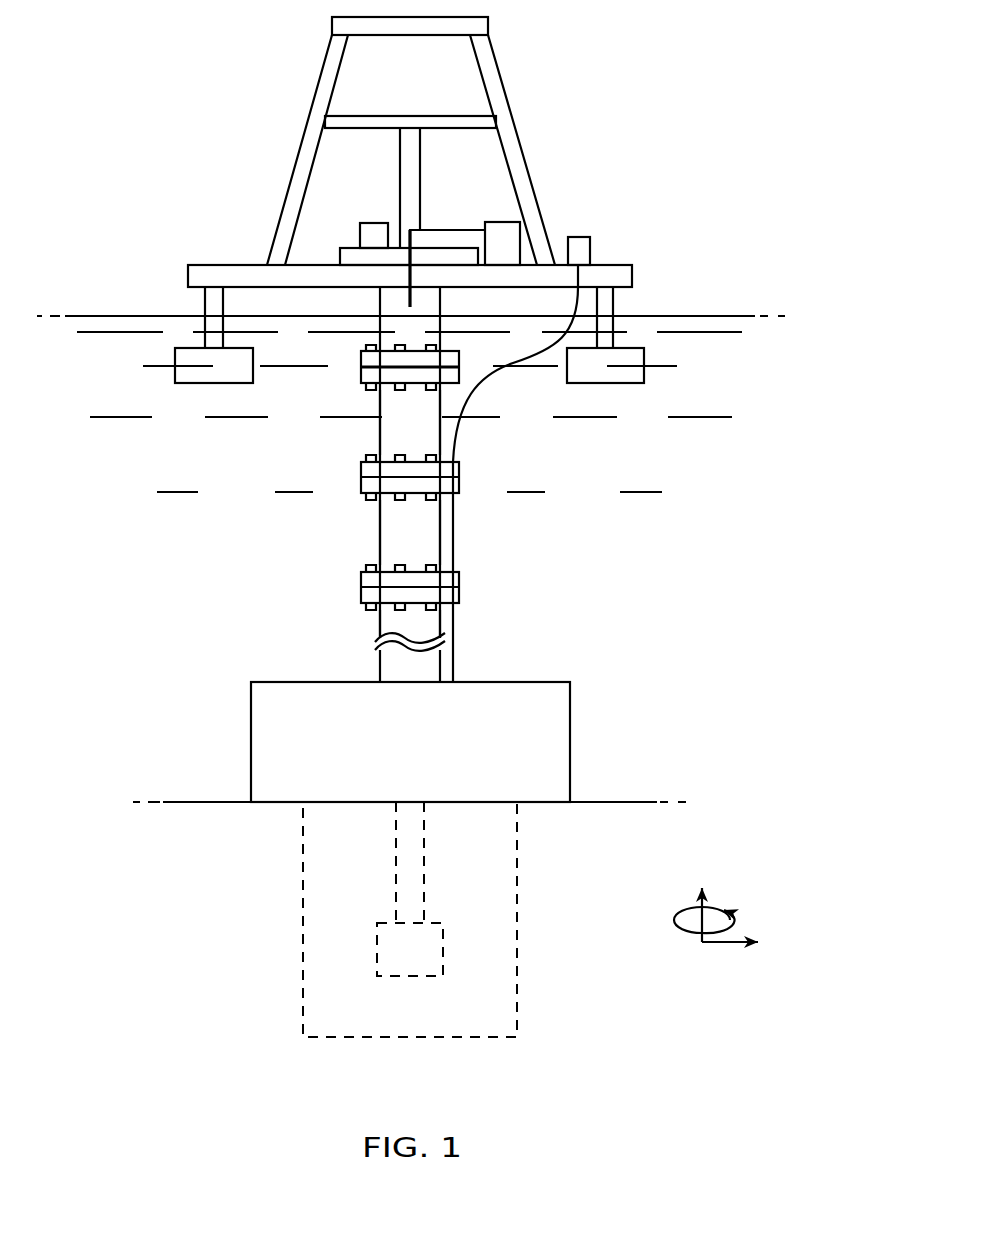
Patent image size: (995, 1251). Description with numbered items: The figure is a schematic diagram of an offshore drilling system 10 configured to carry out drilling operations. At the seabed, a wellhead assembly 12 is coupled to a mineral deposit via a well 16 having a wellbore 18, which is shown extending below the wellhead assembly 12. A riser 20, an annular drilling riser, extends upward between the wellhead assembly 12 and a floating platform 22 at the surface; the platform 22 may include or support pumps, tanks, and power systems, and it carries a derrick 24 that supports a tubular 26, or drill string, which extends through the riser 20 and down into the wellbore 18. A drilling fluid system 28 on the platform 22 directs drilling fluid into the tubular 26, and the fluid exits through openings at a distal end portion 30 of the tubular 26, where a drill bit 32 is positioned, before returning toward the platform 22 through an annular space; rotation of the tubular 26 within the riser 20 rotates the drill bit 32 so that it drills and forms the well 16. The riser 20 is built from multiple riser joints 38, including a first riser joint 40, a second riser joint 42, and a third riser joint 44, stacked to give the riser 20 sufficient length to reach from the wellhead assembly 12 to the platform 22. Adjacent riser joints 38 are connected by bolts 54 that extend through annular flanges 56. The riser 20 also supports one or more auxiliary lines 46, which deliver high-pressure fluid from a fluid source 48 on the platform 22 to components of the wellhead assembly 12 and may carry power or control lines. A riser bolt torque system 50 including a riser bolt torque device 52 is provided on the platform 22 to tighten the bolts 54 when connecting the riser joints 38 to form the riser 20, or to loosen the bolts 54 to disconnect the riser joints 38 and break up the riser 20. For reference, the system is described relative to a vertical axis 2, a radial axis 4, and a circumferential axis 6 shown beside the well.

The drilling system 10 is at (474, 134).
The derrick 24 is at (523, 152).
The tubular 26 is at (421, 188).
The drilling fluid system 28 is at (502, 222).
The riser bolt torque system 50 is at (400, 199).
The riser bolt torque device 52 is at (374, 222).
The fluid source 48 is at (573, 237).
The platform 22 is at (612, 265).
The auxiliary lines 46 is at (493, 383).
The riser joints 38 is at (429, 484).
The riser 20 is at (416, 484).
The first riser joint 40 is at (380, 425).
The second riser joint 42 is at (380, 531).
The third riser joint 44 is at (380, 622).
The bolts 54 is at (368, 453).
The flanges 56 is at (460, 466).
The wellhead assembly 12 is at (570, 742).
The wellbore 18 is at (454, 919).
The well 16 is at (471, 919).
The distal end portion 30 is at (411, 975).
The drill bit 32 is at (377, 951).
The vertical axis 2 is at (697, 910).
The radial axis 4 is at (725, 947).
The circumferential axis 6 is at (690, 931).